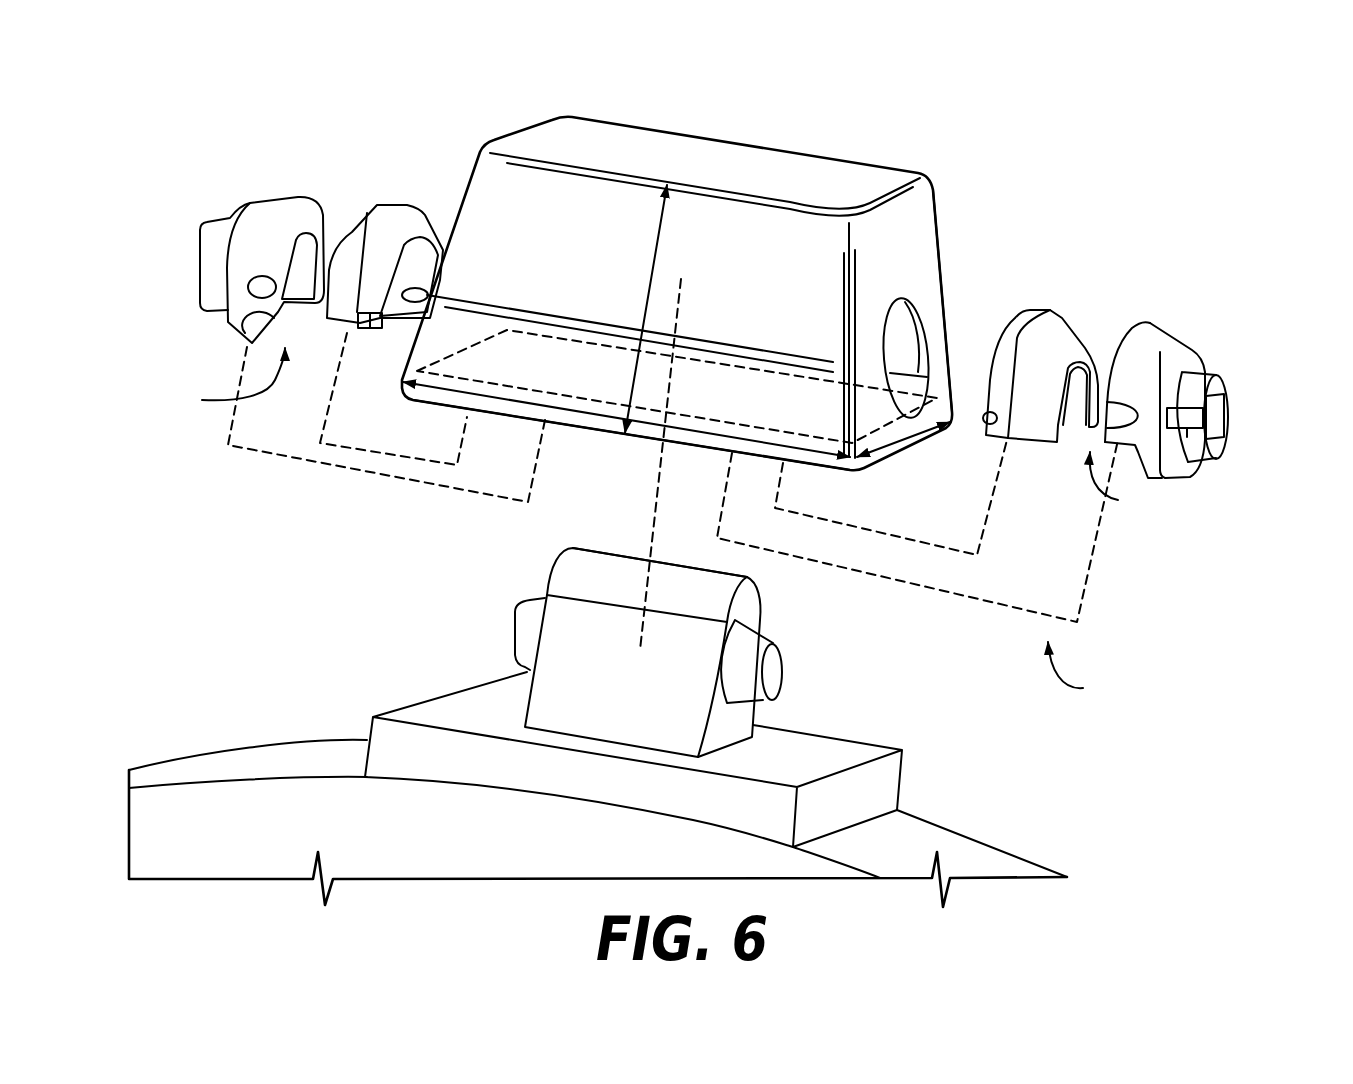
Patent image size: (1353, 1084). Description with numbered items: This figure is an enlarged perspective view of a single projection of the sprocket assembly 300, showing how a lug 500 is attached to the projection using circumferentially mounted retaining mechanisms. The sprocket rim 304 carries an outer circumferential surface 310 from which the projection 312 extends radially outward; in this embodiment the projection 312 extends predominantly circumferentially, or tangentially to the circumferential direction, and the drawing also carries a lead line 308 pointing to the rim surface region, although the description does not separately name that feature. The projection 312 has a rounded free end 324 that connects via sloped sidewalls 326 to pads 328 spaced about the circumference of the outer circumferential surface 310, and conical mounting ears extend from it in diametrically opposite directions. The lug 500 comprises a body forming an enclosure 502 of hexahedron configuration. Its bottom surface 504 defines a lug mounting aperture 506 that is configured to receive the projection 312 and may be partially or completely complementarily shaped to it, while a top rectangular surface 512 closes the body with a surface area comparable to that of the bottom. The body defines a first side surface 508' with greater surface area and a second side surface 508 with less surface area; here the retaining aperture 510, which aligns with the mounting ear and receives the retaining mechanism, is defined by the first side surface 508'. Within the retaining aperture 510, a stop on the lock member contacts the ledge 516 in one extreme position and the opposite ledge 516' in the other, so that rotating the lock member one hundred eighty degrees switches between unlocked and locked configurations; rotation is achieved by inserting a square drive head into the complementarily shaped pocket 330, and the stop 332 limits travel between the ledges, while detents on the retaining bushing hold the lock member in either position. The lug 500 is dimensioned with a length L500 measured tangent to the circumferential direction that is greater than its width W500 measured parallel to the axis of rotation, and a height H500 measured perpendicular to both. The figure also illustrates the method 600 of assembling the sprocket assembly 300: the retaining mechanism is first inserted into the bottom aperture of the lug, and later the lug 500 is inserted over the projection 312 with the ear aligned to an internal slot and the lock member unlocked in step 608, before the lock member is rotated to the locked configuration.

The sprocket assembly 300 is at (633, 479).
The sprocket rim 304 is at (1000, 810).
The exterior surface 308 is at (1022, 855).
The outer circumferential surface 310 is at (915, 845).
The projection 312 is at (694, 652).
The rounded free end 324 is at (620, 546).
The sloped sidewalls 326 is at (626, 710).
The pads 328 is at (850, 752).
The pocket 330 is at (1232, 400).
The stop 332 is at (1213, 440).
The lug 500 is at (716, 284).
The enclosure 502 is at (783, 170).
The bottom surface 504 is at (800, 463).
The lug mounting aperture 506 is at (720, 425).
The side surface 508 is at (937, 332).
The first side surface 508' is at (674, 237).
The retaining aperture 510 is at (956, 306).
The top rectangular surface 512 is at (658, 143).
The ledge 516 is at (897, 335).
The opposite ledge 516' is at (844, 338).
The method of assembling a sprocket assembly 600 is at (1075, 675).
The step of inserting lug over projection 608 is at (660, 480).
The height of the lug H500 is at (664, 231).
The length of the lug L500 is at (480, 416).
The width of the lug W500 is at (913, 438).